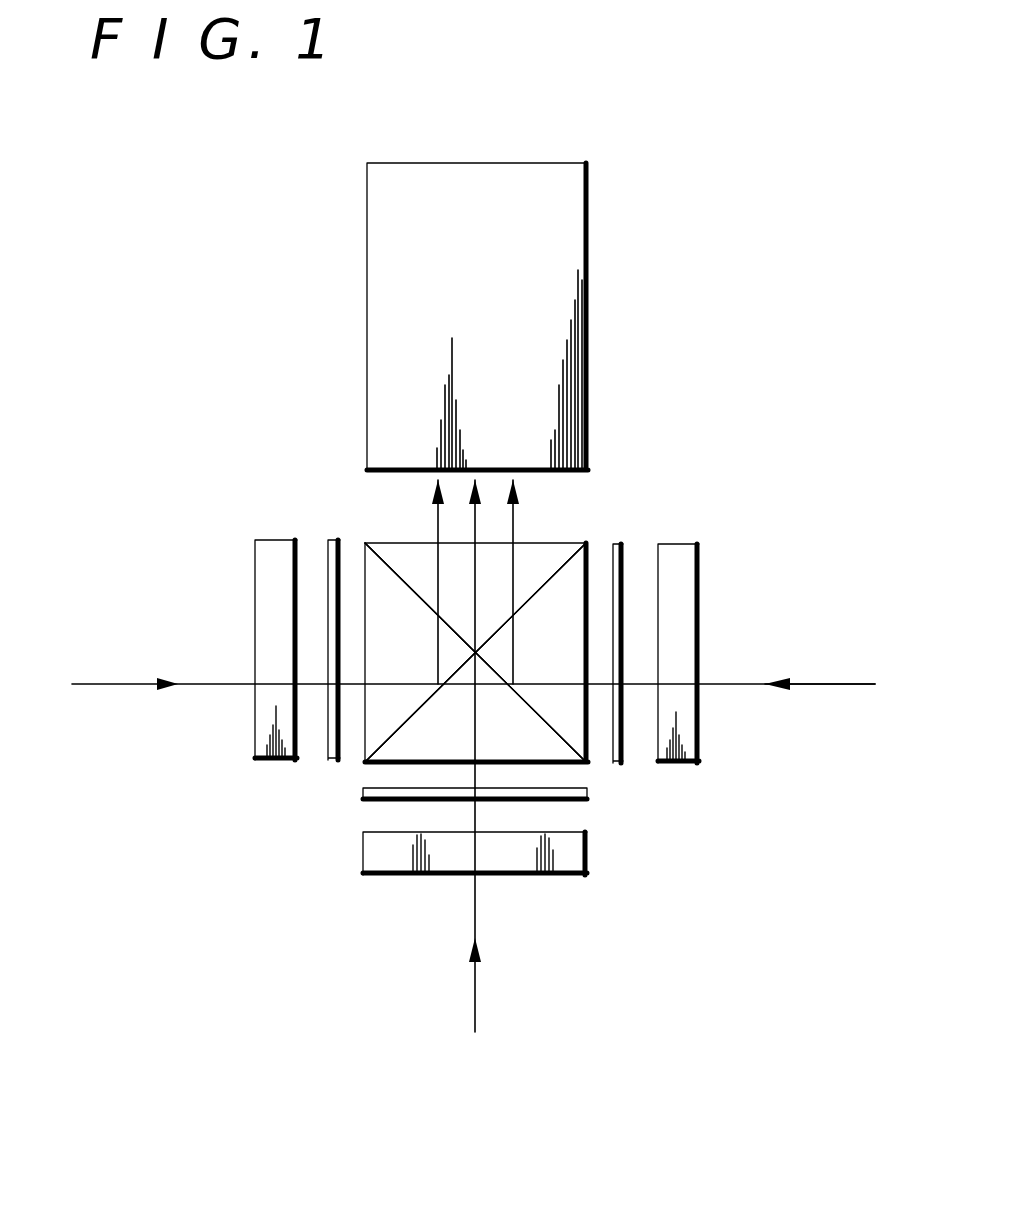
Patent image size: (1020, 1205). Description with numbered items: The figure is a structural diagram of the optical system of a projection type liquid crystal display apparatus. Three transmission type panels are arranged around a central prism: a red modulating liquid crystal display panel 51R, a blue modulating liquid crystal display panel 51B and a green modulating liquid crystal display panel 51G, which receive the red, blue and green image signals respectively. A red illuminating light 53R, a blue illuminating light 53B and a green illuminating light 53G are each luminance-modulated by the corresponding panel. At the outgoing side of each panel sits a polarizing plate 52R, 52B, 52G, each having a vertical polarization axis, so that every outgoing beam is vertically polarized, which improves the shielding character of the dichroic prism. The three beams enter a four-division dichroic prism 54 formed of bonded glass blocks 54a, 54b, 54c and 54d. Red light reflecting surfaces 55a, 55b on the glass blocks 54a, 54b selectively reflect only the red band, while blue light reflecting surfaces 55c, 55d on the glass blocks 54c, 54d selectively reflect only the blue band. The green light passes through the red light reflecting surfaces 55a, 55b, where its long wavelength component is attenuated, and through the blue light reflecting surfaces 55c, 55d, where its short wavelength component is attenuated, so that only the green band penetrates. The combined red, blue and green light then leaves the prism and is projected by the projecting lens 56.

The red modulating transmission type liquid crystal display panel 51R is at (268, 540).
The green modulating liquid crystal display panel 51G is at (412, 875).
The blue modulating liquid crystal display panel 51B is at (699, 740).
The polarizing plate 52R is at (337, 540).
The polarizing plate 52G is at (363, 793).
The polarizing plate 52B is at (618, 765).
The red illuminating light 53R is at (473, 667).
The green illuminating light 53G is at (476, 982).
The blue illuminating light 53B is at (820, 669).
The four-division dichroic prism 54 is at (410, 552).
The glass block 54a is at (475, 708).
The glass block 54b is at (530, 552).
The glass block 54c is at (531, 652).
The glass block 54d is at (420, 652).
The red light reflecting surface 55a is at (402, 718).
The red light reflecting surface 55b is at (558, 568).
The blue light reflecting surface 55c is at (565, 737).
The blue light reflecting surface 55d is at (388, 552).
The projecting lens 56 is at (555, 312).